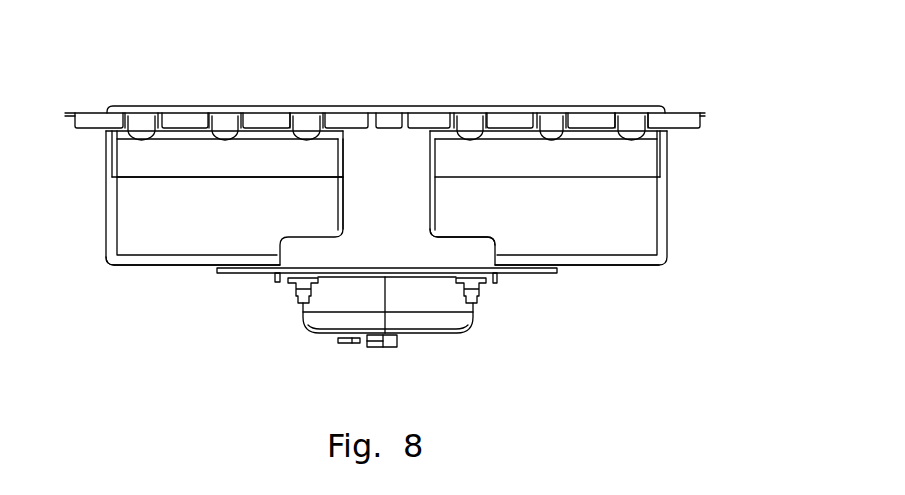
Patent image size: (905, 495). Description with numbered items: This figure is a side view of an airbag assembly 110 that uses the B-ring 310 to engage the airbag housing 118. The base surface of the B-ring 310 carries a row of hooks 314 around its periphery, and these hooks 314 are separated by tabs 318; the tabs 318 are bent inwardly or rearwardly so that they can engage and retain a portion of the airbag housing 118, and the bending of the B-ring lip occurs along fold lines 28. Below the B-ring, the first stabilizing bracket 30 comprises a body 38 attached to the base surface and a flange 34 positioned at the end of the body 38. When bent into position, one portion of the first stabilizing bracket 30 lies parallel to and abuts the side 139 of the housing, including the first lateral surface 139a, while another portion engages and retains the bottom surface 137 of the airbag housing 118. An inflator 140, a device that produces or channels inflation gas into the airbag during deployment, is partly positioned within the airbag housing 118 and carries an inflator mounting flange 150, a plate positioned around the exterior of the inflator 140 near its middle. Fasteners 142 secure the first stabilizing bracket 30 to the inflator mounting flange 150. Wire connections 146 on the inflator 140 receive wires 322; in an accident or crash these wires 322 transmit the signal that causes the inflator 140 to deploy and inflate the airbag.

The B-ring 310 is at (652, 93).
The fold lines 28 is at (182, 107).
The tabs 318 is at (603, 120).
The hooks 314 is at (140, 120).
The first lateral surface 139a is at (228, 220).
The airbag housing 118 is at (313, 209).
The lateral surfaces 139 is at (622, 222).
The body 38 is at (422, 197).
The first stabilizing bracket 30 is at (442, 217).
The flange 34 is at (478, 247).
The bottom surface 137 is at (168, 267).
The inflator mounting flange 150 is at (520, 273).
The inflator 140 is at (373, 302).
The fasteners 142 is at (292, 292).
The wires 322 is at (353, 347).
The wire connections 146 is at (393, 345).
The airbag assembly 110 is at (597, 277).